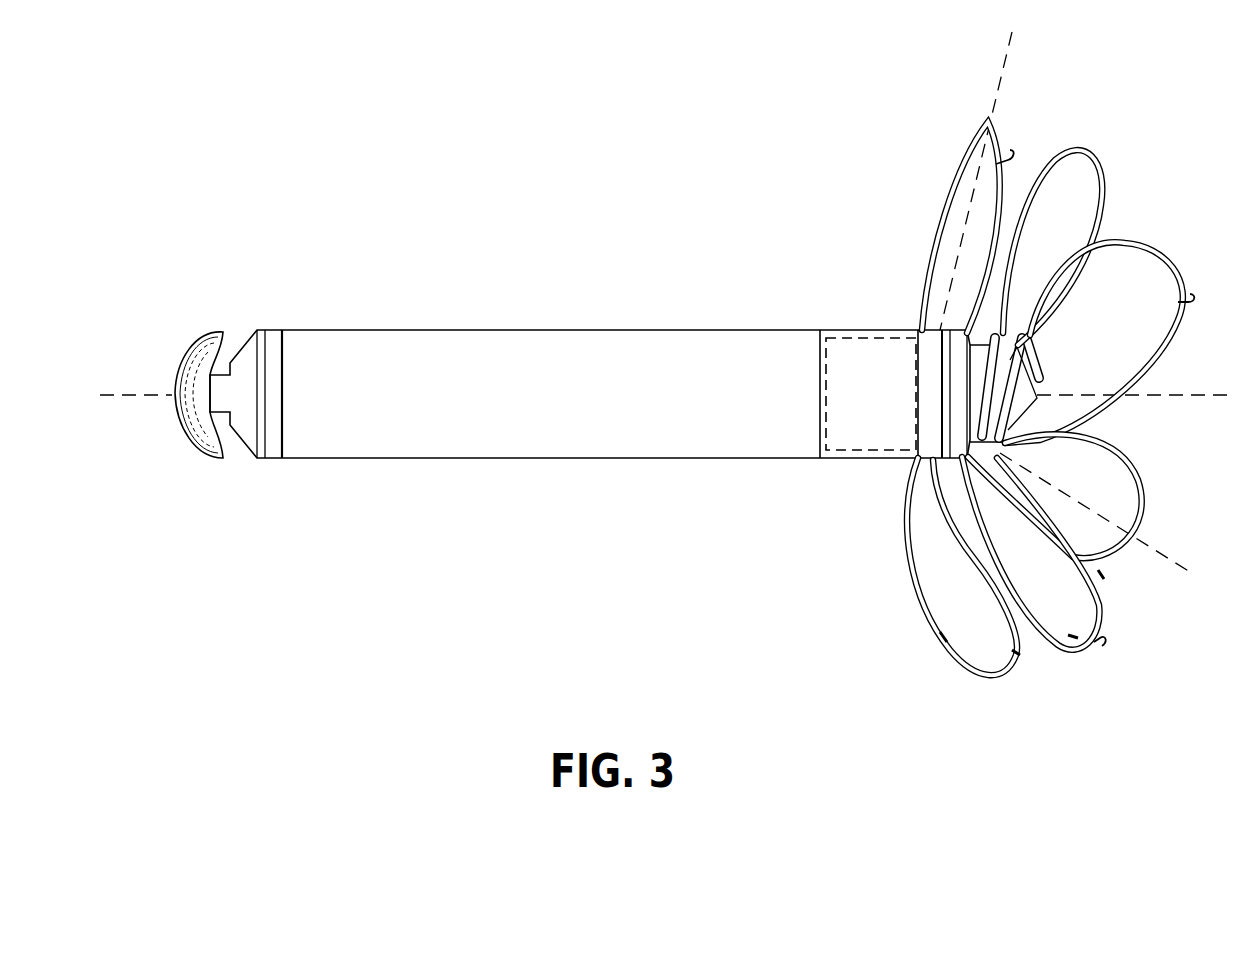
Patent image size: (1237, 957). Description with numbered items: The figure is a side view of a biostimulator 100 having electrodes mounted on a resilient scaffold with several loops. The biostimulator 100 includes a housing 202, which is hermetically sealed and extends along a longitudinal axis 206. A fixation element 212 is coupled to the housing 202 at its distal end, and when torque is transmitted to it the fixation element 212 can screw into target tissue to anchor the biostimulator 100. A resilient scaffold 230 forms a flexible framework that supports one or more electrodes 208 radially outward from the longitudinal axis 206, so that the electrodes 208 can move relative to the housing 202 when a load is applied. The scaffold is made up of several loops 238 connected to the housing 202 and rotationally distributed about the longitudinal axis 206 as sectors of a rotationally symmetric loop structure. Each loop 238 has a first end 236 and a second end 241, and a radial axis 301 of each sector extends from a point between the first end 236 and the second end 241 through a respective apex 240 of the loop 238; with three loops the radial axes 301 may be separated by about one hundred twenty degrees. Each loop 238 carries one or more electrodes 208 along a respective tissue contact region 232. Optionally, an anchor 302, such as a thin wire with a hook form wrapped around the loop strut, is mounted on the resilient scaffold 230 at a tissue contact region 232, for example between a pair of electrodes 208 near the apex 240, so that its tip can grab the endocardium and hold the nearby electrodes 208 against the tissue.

The biostimulator 100 is at (312, 278).
The housing 202 is at (860, 331).
The longitudinal axis 206 is at (1180, 398).
The electrode 208 is at (1103, 187).
The fixation element 212 is at (1045, 366).
The resilient scaffold 230 is at (903, 511).
The tissue contact region 232 is at (1062, 648).
The first end 236 is at (925, 355).
The loop 238 is at (942, 215).
The apex 240 is at (985, 121).
The second end 241 is at (968, 332).
The radial axis 301 is at (1015, 52).
The anchor 302 is at (1003, 161).